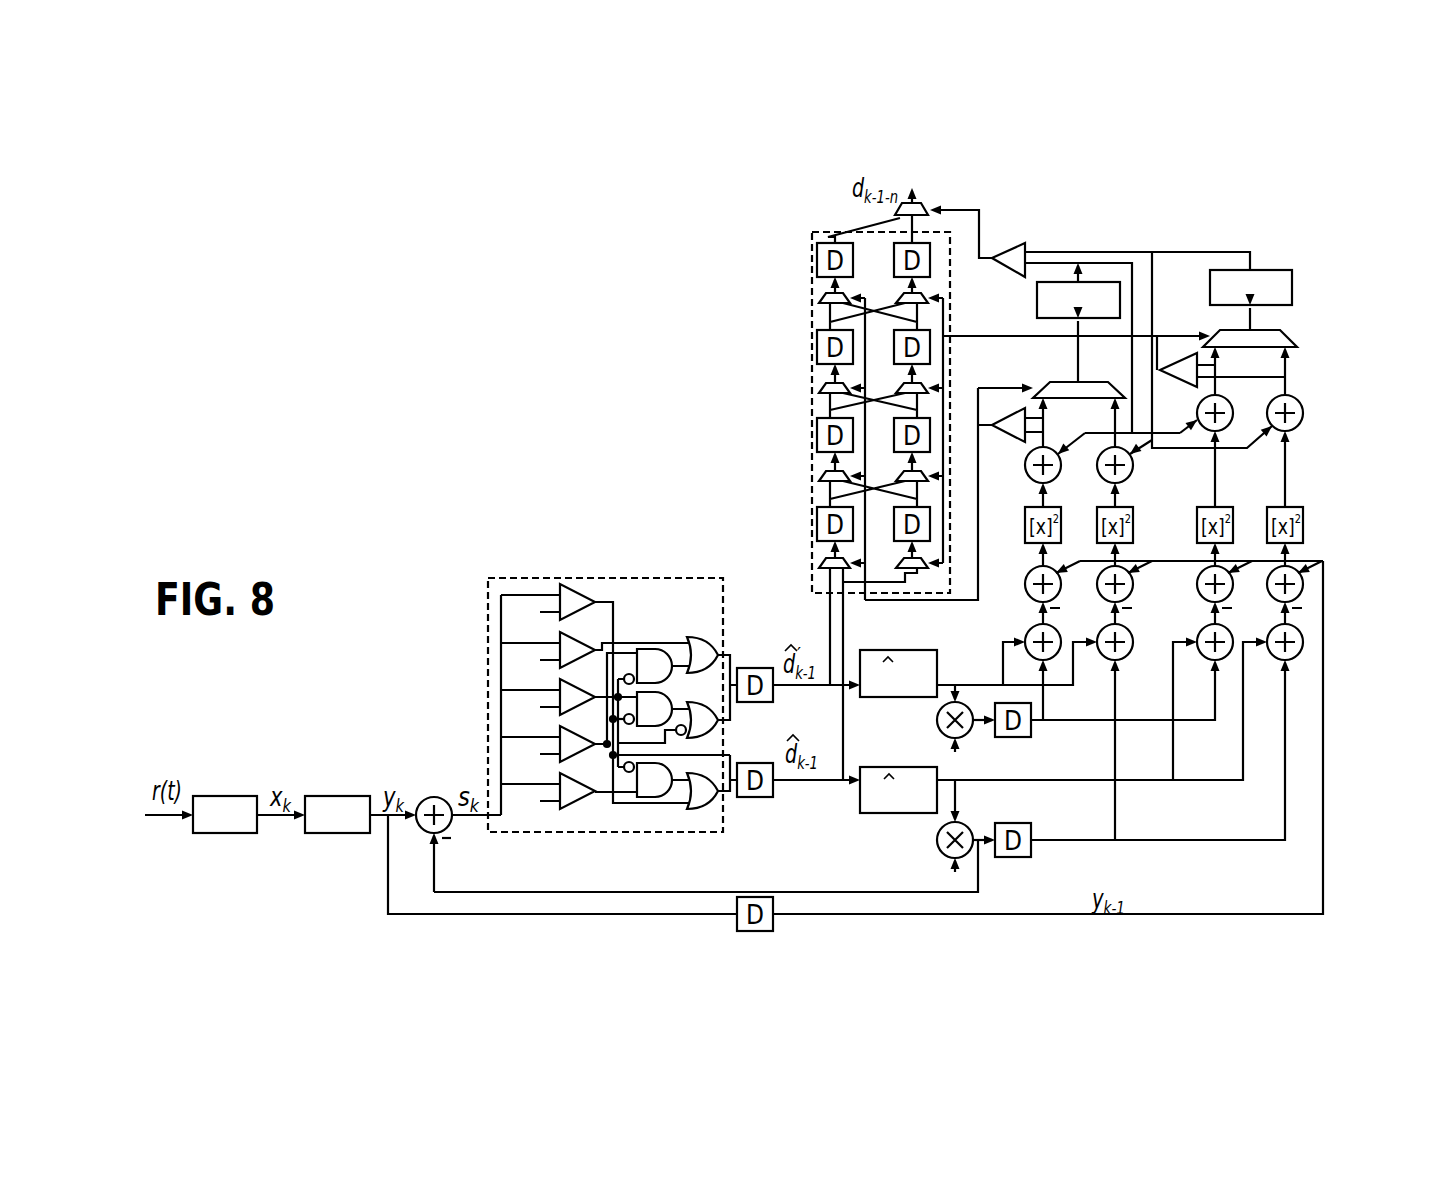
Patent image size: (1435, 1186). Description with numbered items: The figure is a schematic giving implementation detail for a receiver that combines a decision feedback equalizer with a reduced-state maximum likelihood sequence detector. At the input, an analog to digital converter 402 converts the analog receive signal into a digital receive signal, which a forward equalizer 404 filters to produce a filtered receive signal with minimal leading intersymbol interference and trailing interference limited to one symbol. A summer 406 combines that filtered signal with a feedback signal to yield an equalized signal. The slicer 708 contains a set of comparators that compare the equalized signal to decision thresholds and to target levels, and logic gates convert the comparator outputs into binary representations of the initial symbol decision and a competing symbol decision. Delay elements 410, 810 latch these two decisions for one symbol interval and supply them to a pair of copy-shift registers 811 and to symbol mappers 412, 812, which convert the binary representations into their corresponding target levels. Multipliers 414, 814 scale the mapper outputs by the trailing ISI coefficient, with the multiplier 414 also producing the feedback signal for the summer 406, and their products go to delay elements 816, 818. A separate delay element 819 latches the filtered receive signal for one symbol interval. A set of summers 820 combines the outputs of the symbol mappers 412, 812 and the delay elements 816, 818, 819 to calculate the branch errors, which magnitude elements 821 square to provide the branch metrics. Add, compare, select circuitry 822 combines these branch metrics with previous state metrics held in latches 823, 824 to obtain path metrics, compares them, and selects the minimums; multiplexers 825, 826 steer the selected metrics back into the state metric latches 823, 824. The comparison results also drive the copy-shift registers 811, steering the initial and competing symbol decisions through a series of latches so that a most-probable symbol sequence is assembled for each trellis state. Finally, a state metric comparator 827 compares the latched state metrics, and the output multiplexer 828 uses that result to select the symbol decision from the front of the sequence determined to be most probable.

The analog to digital converter 402 is at (243, 836).
The forward equalizer 404 is at (355, 836).
The summer 406 is at (443, 796).
The slicer 708 is at (545, 833).
The delay element 810 is at (762, 703).
The delay element 410 is at (762, 798).
The symbol mapper 812 is at (910, 700).
The symbol mapper 412 is at (910, 816).
The multiplier 814 is at (940, 730).
The multiplier 414 is at (940, 850).
The delay element 816 is at (1028, 738).
The delay element 818 is at (1018, 858).
The delay element 819 is at (735, 928).
The copy-shift registers 811 is at (812, 467).
The summers 820 is at (1332, 565).
The magnitude elements 821 is at (1317, 500).
The add, compare, select circuitry 822 is at (1318, 340).
The state metric latch 823 is at (1209, 302).
The state metric latch 824 is at (1037, 301).
The multiplexer 825 is at (1287, 345).
The multiplexer 826 is at (1074, 380).
The state metric comparator 827 is at (1017, 246).
The output multiplexer 828 is at (925, 204).